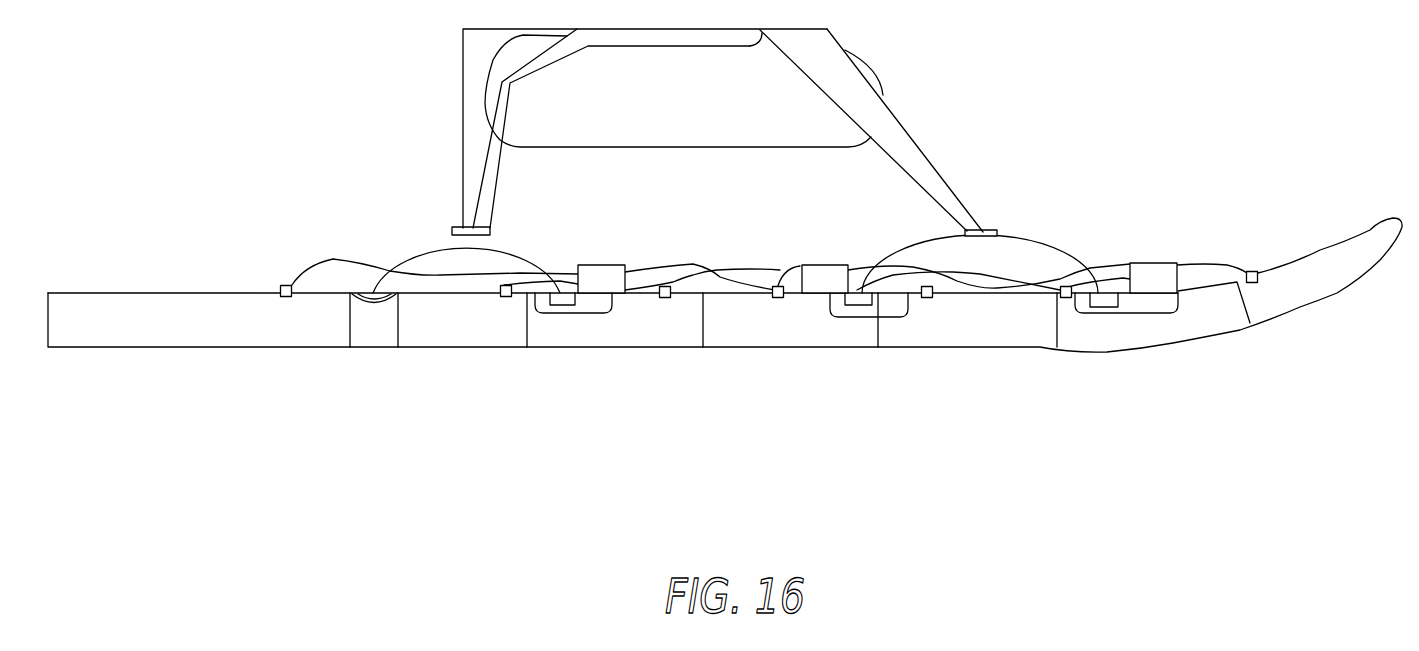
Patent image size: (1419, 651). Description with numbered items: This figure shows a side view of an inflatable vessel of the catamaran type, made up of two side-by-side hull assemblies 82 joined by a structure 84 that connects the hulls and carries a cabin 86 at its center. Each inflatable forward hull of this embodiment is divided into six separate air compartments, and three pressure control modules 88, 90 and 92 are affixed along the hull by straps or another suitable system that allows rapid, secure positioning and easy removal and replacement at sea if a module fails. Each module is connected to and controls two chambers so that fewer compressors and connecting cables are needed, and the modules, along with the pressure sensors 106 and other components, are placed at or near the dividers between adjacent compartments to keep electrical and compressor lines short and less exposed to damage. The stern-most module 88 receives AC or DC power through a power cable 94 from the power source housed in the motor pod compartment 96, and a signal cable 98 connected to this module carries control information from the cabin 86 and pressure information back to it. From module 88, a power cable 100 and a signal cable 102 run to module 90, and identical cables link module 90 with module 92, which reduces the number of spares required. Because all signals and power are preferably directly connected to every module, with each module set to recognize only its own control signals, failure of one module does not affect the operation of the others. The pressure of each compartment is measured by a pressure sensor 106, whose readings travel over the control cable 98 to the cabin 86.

The hull assembly 82 is at (375, 380).
The structure 84 is at (492, 115).
The cabin 86 is at (680, 148).
The pressure control module 88 is at (603, 265).
The pressure control module 90 is at (823, 265).
The pressure control module 92 is at (1153, 263).
The power cable 94 is at (290, 284).
The motor pod compartment 96 is at (125, 293).
The signal cable 98 is at (490, 253).
The power cable 100 is at (693, 257).
The signal cable 102 is at (722, 258).
The pressure sensor 106 is at (508, 297).